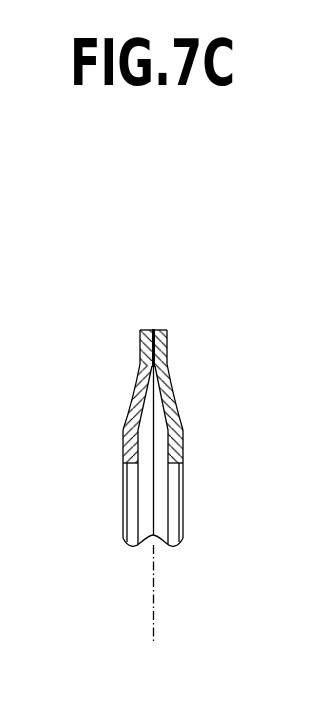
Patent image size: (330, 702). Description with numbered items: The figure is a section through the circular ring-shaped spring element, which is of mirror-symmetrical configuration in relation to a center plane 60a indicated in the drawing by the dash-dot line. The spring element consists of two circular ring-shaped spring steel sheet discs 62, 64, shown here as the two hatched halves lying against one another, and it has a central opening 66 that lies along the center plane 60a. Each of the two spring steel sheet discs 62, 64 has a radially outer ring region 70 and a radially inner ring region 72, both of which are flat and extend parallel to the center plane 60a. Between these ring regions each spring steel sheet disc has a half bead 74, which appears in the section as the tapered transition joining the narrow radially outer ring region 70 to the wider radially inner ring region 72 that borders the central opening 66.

The spring steel sheet disc 62 is at (150, 329).
The spring steel sheet disc 64 is at (162, 329).
The radially outer ring region 70 is at (157, 353).
The half bead 74 is at (114, 402).
The radially inner ring region 72 is at (178, 450).
The central opening 66 is at (125, 478).
The center plane 60a is at (153, 592).